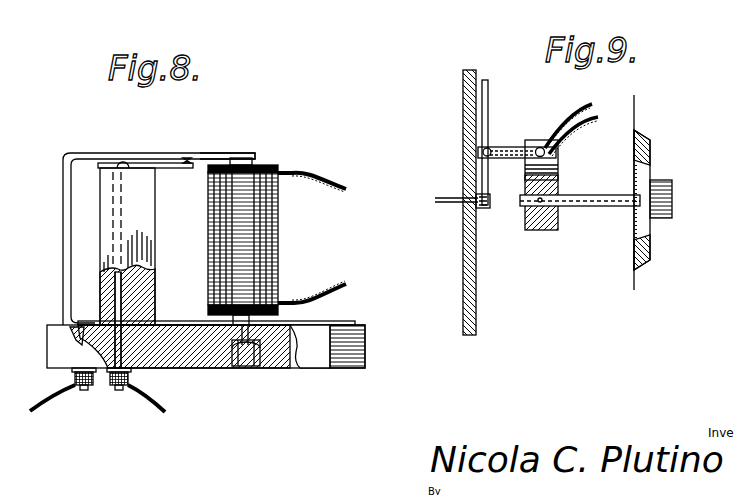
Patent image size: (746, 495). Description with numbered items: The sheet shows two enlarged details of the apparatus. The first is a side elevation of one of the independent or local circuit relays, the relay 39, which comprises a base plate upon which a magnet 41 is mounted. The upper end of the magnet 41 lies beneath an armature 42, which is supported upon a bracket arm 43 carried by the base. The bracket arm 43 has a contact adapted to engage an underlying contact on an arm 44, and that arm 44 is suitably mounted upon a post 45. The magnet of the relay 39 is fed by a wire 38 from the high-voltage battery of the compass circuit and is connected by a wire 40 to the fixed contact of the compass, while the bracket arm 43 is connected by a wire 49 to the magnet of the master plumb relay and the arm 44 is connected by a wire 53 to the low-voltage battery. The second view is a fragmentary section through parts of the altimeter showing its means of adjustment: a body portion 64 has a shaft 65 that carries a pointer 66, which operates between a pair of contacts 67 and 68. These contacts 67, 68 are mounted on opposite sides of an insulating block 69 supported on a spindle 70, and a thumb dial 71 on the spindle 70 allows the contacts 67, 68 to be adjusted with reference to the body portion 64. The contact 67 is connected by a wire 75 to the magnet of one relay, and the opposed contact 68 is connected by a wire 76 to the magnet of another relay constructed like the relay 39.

In FIG. 8, the wire 38 is at (332, 186).
In FIG. 8, the relay 39 is at (320, 368).
In FIG. 8, the wire 40 is at (351, 282).
In FIG. 8, the magnet 41 is at (278, 235).
In FIG. 8, the armature 42 is at (223, 153).
In FIG. 8, the bracket arm 43 is at (65, 274).
In FIG. 8, the arm 44 is at (170, 168).
In FIG. 8, the post 45 is at (143, 236).
In FIG. 8, the wire 49 is at (40, 409).
In FIG. 8, the wire 53 is at (159, 413).
In FIG. 9, the body portion 64 is at (477, 315).
In FIG. 9, the shaft 65 is at (441, 205).
In FIG. 9, the pointer 66 is at (489, 90).
In FIG. 9, the contact 67 is at (516, 147).
In FIG. 9, the contact 68 is at (504, 146).
In FIG. 9, the insulating block 69 is at (556, 230).
In FIG. 9, the spindle 70 is at (600, 206).
In FIG. 9, the thumb dial 71 is at (652, 150).
In FIG. 9, the wire 75 is at (584, 129).
In FIG. 9, the wire 76 is at (576, 108).